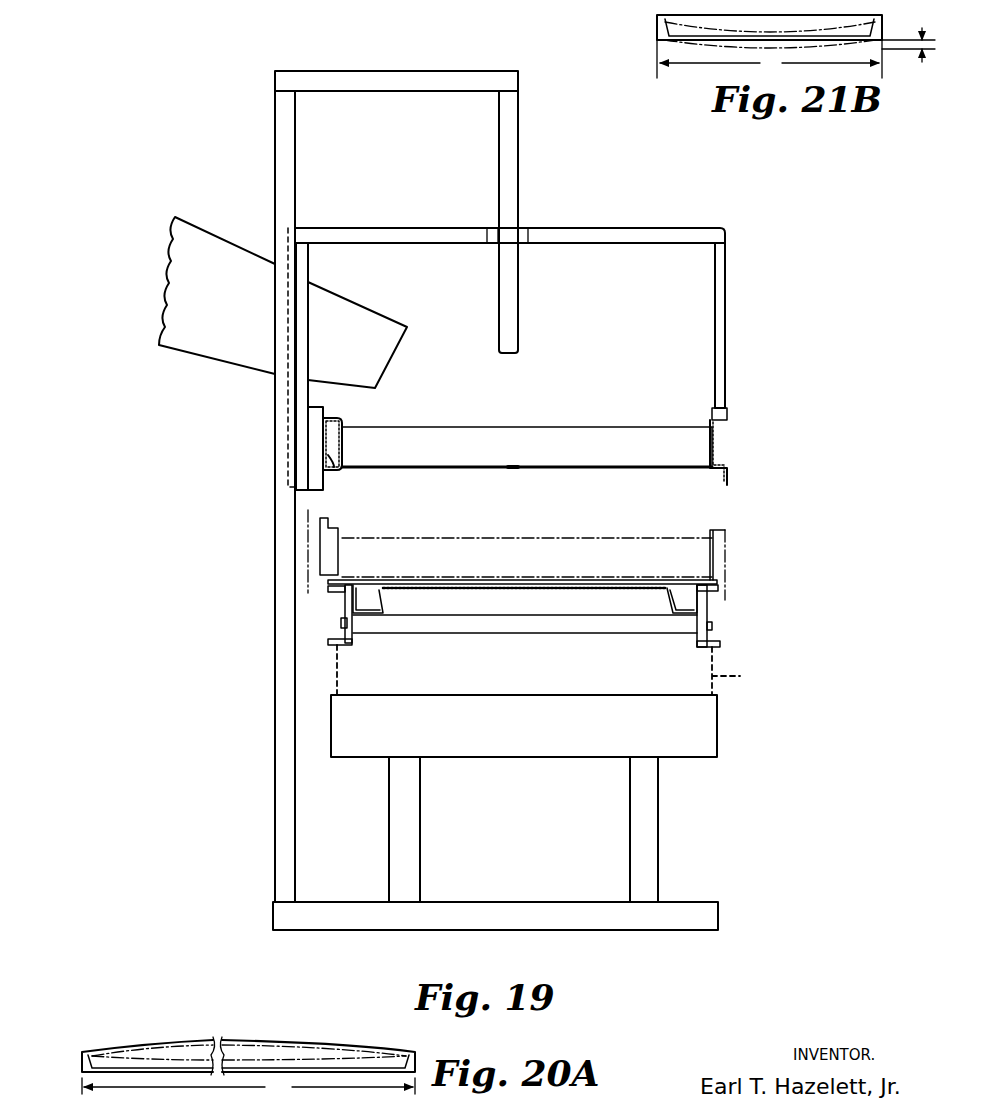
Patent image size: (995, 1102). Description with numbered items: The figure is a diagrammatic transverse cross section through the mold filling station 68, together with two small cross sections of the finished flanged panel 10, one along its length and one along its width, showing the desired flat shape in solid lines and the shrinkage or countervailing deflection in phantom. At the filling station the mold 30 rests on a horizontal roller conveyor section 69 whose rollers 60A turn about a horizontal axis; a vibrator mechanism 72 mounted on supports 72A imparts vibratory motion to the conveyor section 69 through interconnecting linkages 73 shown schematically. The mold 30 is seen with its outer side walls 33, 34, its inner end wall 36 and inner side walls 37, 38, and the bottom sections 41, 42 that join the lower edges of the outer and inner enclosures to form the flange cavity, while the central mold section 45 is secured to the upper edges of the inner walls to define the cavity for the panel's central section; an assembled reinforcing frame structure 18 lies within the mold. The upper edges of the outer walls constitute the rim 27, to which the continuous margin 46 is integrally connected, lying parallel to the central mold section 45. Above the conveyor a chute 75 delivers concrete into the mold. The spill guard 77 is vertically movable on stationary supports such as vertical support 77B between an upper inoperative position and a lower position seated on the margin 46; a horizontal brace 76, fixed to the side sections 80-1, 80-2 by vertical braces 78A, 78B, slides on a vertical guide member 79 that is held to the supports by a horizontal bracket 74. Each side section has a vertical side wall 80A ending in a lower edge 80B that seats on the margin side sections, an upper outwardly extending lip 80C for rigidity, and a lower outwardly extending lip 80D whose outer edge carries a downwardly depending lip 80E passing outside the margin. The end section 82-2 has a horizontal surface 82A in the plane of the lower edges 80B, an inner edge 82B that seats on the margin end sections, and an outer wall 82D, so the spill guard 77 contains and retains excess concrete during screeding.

In FIG. 21B, the flanged panel 10 is at (652, 30).
In FIG. 20A, the flanged panel 10 is at (124, 1026).
In FIG. 19, the reinforcing frame structure 18 is at (384, 595).
In FIG. 19, the rim 27 is at (353, 580).
In FIG. 19, the mold 30 is at (586, 608).
In FIG. 19, the outer side wall 33 is at (338, 600).
In FIG. 19, the outer side wall 34 is at (707, 604).
In FIG. 19, the inner end wall 36 is at (508, 619).
In FIG. 19, the inner side wall 37 is at (377, 616).
In FIG. 19, the inner side wall 38 is at (673, 613).
In FIG. 19, the bottom section 41 is at (358, 633).
In FIG. 19, the bottom section 42 is at (684, 635).
In FIG. 19, the central mold section 45 is at (498, 588).
In FIG. 19, the margin 46 is at (718, 578).
In FIG. 19, the rollers 60A is at (461, 632).
In FIG. 19, the mold filling station 68 is at (735, 540).
In FIG. 19, the horizontal roller conveyor section 69 is at (714, 628).
In FIG. 19, the vibrator mechanism 72 is at (719, 740).
In FIG. 19, the supports 72A is at (412, 854).
In FIG. 19, the interconnecting linkages 73 is at (334, 672).
In FIG. 19, the horizontal bracket 74 is at (436, 82).
In FIG. 19, the chute 75 is at (283, 302).
In FIG. 19, the horizontal brace 76 is at (625, 240).
In FIG. 19, the spill guard 77 is at (732, 455).
In FIG. 19, the vertical support 77B is at (286, 191).
In FIG. 19, the vertical brace 78A is at (725, 301).
In FIG. 19, the vertical brace 78B is at (305, 276).
In FIG. 19, the vertical guide member 79 is at (518, 175).
In FIG. 19, the vertical side wall 80A is at (345, 447).
In FIG. 19, the lower edge 80B is at (712, 470).
In FIG. 19, the outwardly extending lip 80C is at (338, 419).
In FIG. 19, the outwardly extending lip 80D is at (330, 463).
In FIG. 19, the downwardly depending lip 80E is at (728, 474).
In FIG. 19, the side section 80-1 is at (330, 473).
In FIG. 19, the side section 80-2 is at (700, 548).
In FIG. 19, the horizontal surface 82A is at (472, 466).
In FIG. 19, the inner edge 82B is at (516, 470).
In FIG. 19, the outer wall 82D is at (625, 449).
In FIG. 19, the end section 82-2 is at (530, 444).